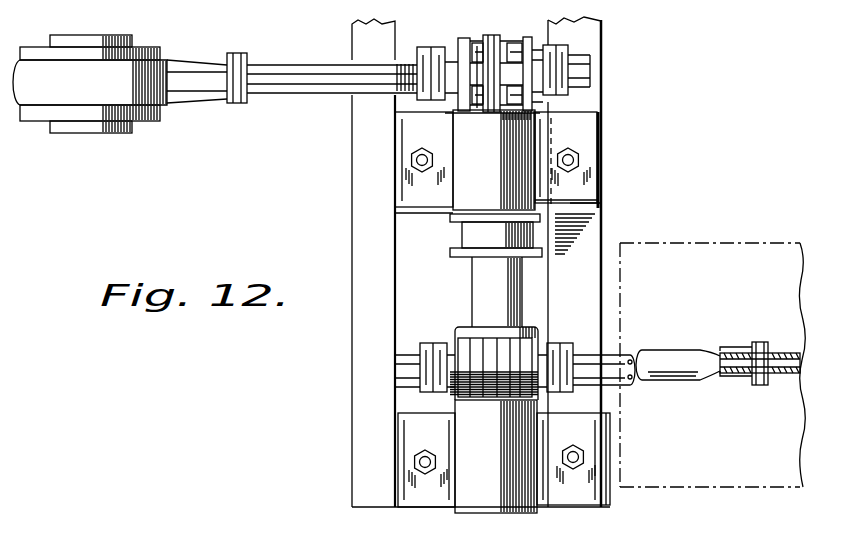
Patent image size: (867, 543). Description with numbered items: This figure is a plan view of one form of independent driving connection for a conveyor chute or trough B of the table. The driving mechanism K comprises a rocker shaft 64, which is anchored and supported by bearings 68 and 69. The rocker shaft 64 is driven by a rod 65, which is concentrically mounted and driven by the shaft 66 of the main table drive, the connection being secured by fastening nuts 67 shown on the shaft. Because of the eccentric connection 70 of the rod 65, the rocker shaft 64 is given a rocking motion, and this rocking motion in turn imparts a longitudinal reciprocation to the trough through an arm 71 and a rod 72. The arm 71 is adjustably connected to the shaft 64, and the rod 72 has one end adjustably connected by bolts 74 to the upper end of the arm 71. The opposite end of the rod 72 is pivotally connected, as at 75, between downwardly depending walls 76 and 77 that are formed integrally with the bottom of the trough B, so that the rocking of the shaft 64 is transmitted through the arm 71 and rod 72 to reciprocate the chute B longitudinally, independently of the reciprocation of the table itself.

The eccentric connection 70 is at (90, 84).
The shaft 66 is at (86, 129).
The rod 65 is at (272, 94).
The nuts 67 is at (423, 47).
The bearing 68 is at (510, 148).
The driving mechanism K is at (545, 262).
The rocker shaft 64 is at (485, 287).
The bolt 74 is at (435, 347).
The arm 71 is at (498, 368).
The bearing 69 is at (497, 496).
The rod 72 is at (660, 355).
The downwardly depending wall 76 is at (738, 355).
The pivotal connection 75 is at (762, 385).
The downwardly depending wall 77 is at (726, 378).
The conveyor chute B is at (482, 389).